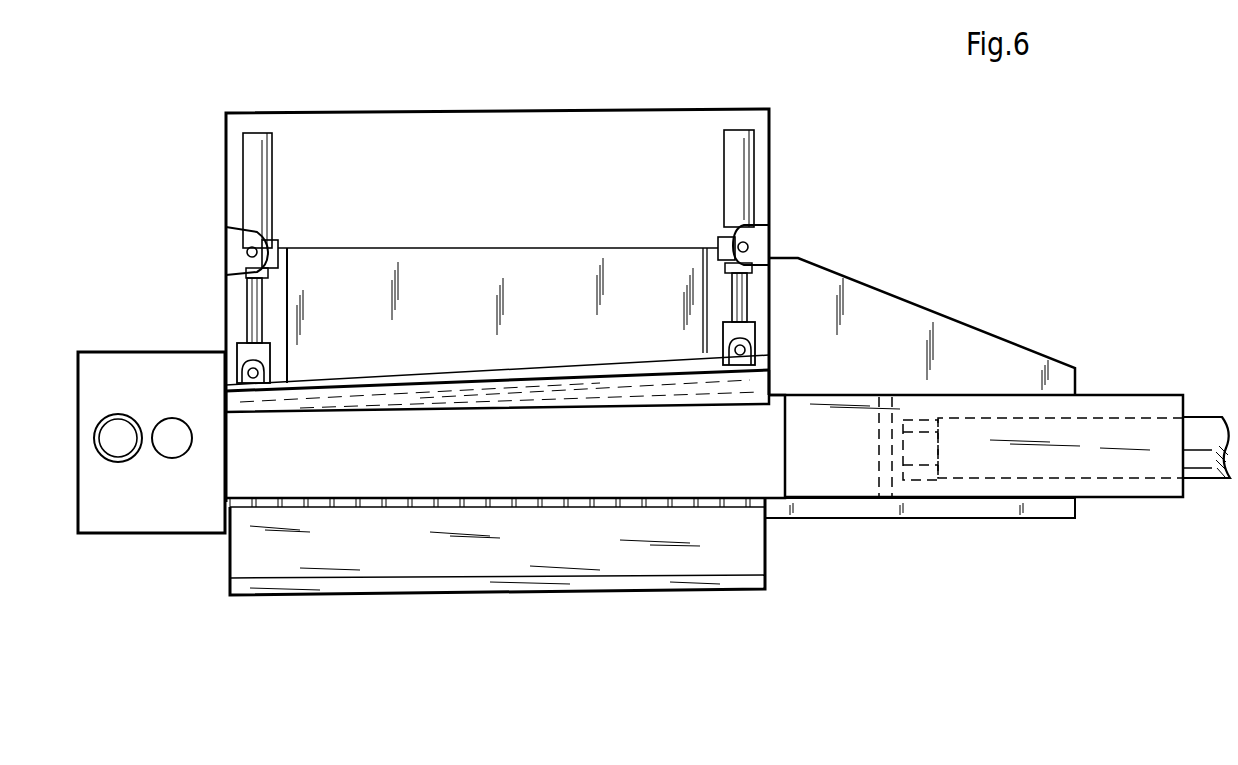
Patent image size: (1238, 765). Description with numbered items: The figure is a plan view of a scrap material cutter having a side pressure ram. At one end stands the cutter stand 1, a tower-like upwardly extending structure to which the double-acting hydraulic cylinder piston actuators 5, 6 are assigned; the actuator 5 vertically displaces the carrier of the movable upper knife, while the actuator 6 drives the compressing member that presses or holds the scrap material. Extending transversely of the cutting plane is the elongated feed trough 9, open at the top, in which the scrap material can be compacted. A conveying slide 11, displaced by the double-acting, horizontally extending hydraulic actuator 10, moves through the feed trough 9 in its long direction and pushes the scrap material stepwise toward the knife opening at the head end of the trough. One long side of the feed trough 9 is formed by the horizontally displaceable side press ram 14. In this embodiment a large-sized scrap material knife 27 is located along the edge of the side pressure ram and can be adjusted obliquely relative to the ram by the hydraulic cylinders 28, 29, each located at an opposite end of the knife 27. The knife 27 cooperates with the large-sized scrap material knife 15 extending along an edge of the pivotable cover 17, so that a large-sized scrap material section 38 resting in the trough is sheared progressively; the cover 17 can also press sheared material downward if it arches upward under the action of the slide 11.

The cutter stand 1 is at (130, 510).
The double-acting hydraulic cylinder piston actuator 5 is at (112, 430).
The double-acting hydraulic cylinder piston actuator 6 is at (172, 428).
The feed trough 9 is at (668, 469).
The hydraulic actuator 10 is at (1210, 462).
The conveying slide 11 is at (1062, 410).
The side press ram 14 is at (533, 277).
The large-sized scrap material knife 15 is at (447, 587).
The cover 17 is at (695, 558).
The large-sized scrap material knife 27 is at (670, 350).
The hydraulic cylinder 28 is at (257, 157).
The hydraulic cylinder 29 is at (742, 160).
The large-sized scrap material section 38 is at (417, 393).